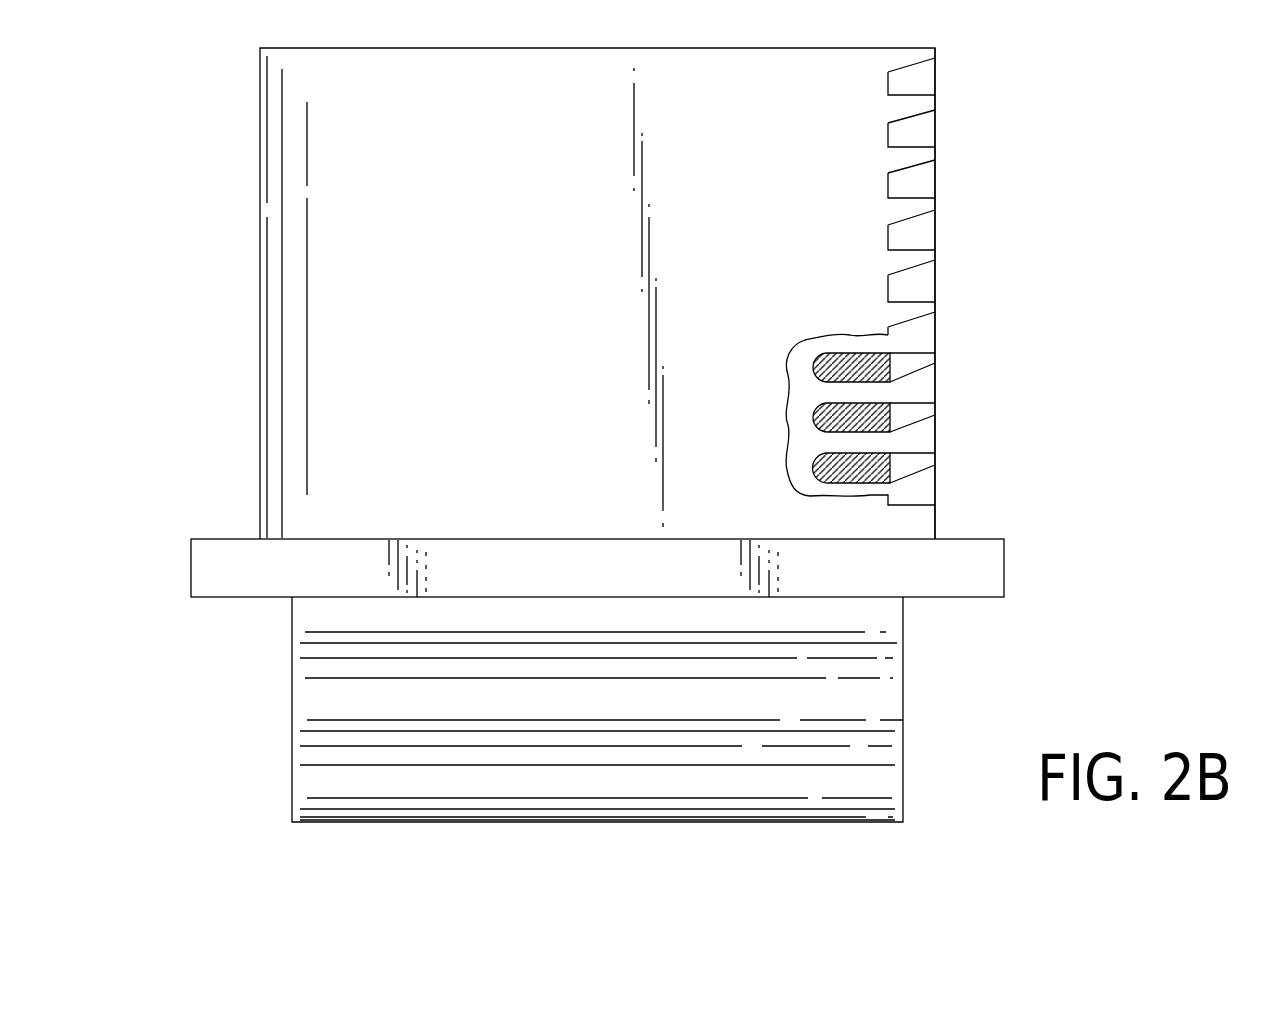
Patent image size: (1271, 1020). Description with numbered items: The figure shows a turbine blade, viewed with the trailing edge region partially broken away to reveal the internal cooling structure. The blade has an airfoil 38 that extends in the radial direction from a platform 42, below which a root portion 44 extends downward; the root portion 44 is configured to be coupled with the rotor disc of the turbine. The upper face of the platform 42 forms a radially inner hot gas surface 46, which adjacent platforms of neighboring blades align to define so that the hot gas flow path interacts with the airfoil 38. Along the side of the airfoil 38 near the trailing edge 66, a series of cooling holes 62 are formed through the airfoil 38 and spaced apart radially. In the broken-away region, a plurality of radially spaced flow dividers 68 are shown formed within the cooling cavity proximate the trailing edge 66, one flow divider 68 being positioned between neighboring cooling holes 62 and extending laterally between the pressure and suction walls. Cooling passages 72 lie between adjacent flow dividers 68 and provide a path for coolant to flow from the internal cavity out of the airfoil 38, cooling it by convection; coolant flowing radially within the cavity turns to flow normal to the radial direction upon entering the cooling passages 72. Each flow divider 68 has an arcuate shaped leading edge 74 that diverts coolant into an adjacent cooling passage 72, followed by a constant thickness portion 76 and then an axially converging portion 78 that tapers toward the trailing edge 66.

The airfoil 38 is at (515, 297).
The platform 42 is at (191, 567).
The root portion 44 is at (292, 735).
The radially inner hot gas surface 46 is at (226, 538).
The cooling holes 62 is at (913, 82).
The trailing edge 66 is at (937, 180).
The radially spaced flow dividers 68 is at (815, 420).
The cooling passages 72 is at (893, 389).
The arcuate shaped leading edge 74 is at (815, 370).
The constant thickness portion 76 is at (853, 478).
The axially converging portion 78 is at (913, 468).